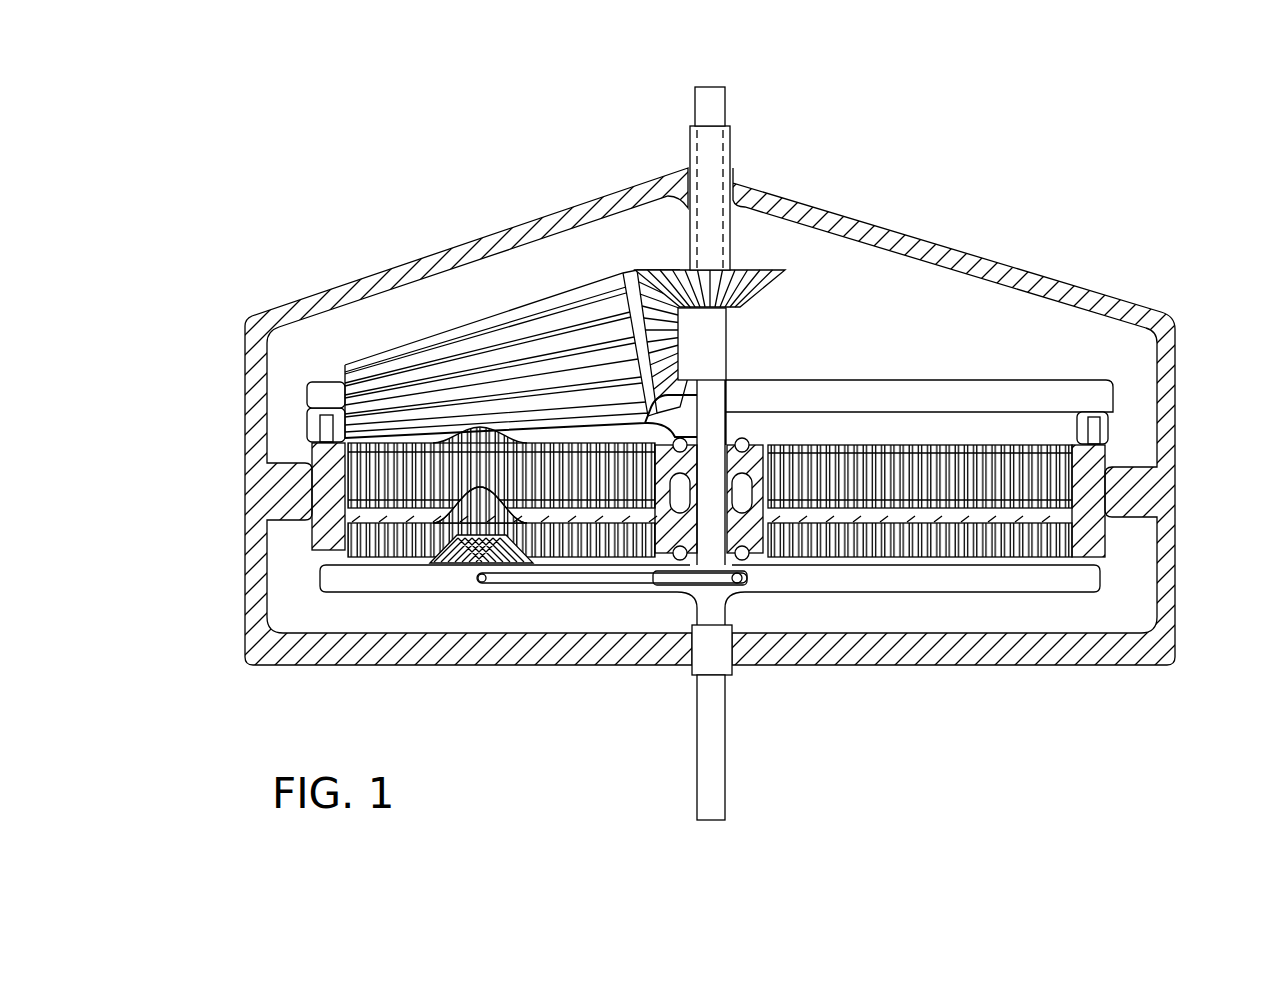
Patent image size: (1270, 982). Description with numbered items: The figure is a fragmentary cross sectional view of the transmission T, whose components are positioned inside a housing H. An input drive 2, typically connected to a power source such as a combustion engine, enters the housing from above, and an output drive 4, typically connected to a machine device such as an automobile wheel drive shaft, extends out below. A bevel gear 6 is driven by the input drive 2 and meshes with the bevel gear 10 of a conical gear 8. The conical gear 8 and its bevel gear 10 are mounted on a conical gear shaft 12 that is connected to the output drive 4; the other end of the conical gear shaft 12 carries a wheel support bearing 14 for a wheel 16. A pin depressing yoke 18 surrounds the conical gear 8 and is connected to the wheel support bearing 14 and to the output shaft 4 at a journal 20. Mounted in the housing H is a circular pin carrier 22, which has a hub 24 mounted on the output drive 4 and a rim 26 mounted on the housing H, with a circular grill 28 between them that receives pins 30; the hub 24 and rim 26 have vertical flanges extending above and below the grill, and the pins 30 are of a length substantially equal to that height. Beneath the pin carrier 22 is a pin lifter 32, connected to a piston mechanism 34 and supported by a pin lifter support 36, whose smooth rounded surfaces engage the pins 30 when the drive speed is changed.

The transmission T is at (285, 170).
The housing H is at (410, 255).
The input drive 2 is at (730, 140).
The output drive 4 is at (725, 95).
The bevel gear 6 is at (785, 280).
The conical gear 8 is at (550, 297).
The bevel gear 10 is at (663, 267).
The conical gear shaft 12 is at (692, 338).
The wheel support bearing 14 is at (323, 390).
The wheel 16 is at (318, 443).
The pin depressing yoke 18 is at (412, 432).
The journal 20 is at (697, 395).
The pin carrier 22 is at (968, 415).
The hub 24 is at (763, 443).
The rim 26 is at (1110, 462).
The circular grill 28 is at (1017, 530).
The pins 30 is at (937, 570).
The pin lifter 32 is at (448, 567).
The piston mechanism 34 is at (573, 583).
The pin lifter support 36 is at (347, 592).